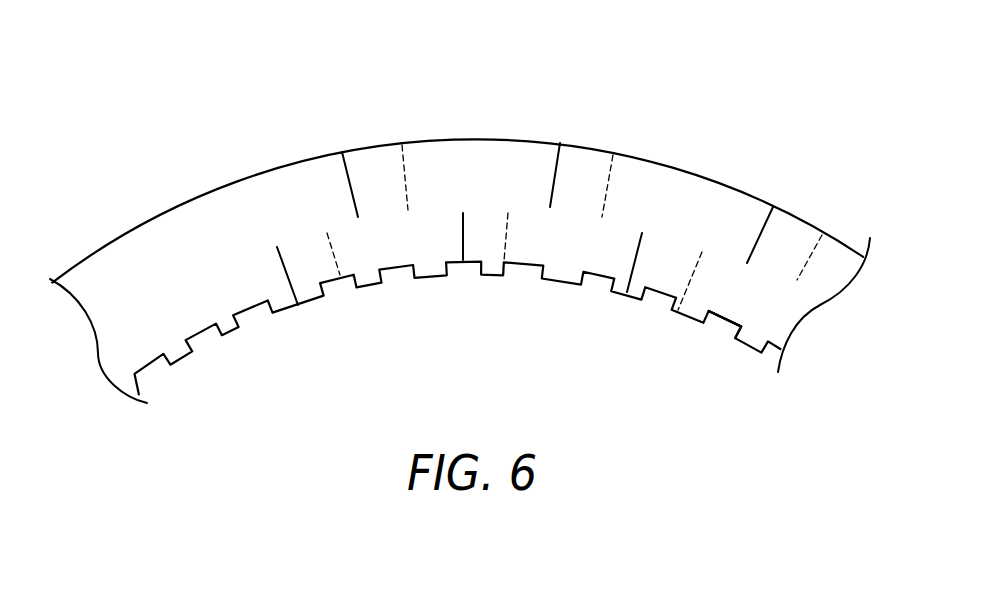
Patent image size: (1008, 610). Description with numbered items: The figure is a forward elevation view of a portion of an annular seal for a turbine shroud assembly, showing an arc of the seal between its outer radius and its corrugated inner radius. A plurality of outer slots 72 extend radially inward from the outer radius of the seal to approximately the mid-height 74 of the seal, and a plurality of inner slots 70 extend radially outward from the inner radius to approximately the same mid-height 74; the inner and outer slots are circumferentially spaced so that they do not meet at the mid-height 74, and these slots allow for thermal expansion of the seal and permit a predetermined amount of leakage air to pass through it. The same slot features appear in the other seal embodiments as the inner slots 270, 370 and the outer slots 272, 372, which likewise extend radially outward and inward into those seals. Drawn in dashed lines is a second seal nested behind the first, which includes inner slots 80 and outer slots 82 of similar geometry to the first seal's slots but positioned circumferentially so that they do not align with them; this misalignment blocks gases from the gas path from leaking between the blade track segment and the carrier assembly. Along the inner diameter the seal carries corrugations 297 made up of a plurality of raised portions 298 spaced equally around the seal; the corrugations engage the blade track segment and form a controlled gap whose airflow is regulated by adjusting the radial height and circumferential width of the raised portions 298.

The mid-height 74 is at (129, 268).
The outer slots 72 is at (451, 143).
The outer slots 272 is at (451, 143).
The outer slots 372 is at (355, 192).
The inner slots 70 is at (458, 303).
The inner slots 270 is at (458, 303).
The inner slots 370 is at (463, 237).
The outer slots 82 is at (807, 263).
The inner slots 80 is at (507, 235).
The corrugations 297 is at (715, 350).
The raised portions 298 is at (722, 317).